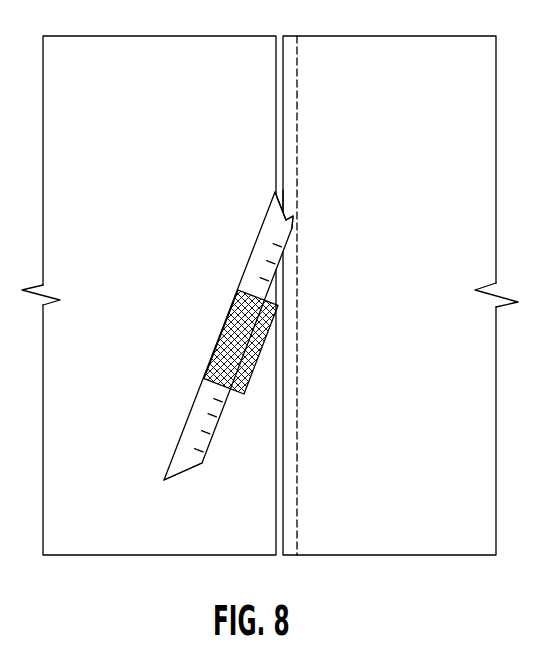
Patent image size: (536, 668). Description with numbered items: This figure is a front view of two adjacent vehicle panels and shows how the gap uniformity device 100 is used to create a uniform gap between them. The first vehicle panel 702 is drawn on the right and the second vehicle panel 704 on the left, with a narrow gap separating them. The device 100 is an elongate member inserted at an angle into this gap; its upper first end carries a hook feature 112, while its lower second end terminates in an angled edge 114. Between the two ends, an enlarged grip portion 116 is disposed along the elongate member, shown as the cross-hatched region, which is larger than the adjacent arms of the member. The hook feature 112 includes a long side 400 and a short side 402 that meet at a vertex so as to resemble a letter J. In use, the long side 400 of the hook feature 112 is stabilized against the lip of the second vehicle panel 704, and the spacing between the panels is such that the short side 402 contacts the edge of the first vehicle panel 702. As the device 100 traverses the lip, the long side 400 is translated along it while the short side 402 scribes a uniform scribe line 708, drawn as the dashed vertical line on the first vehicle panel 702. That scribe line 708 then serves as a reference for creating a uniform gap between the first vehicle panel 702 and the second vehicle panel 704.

The device 100 is at (263, 201).
The hook feature 112 is at (294, 206).
The angled edge 114 is at (182, 475).
The grip portion 116 is at (276, 323).
The long side 400 is at (267, 215).
The short side 402 is at (293, 228).
The first vehicle panel 702 is at (438, 95).
The second vehicle panel 704 is at (147, 95).
The scribe line 708 is at (298, 117).